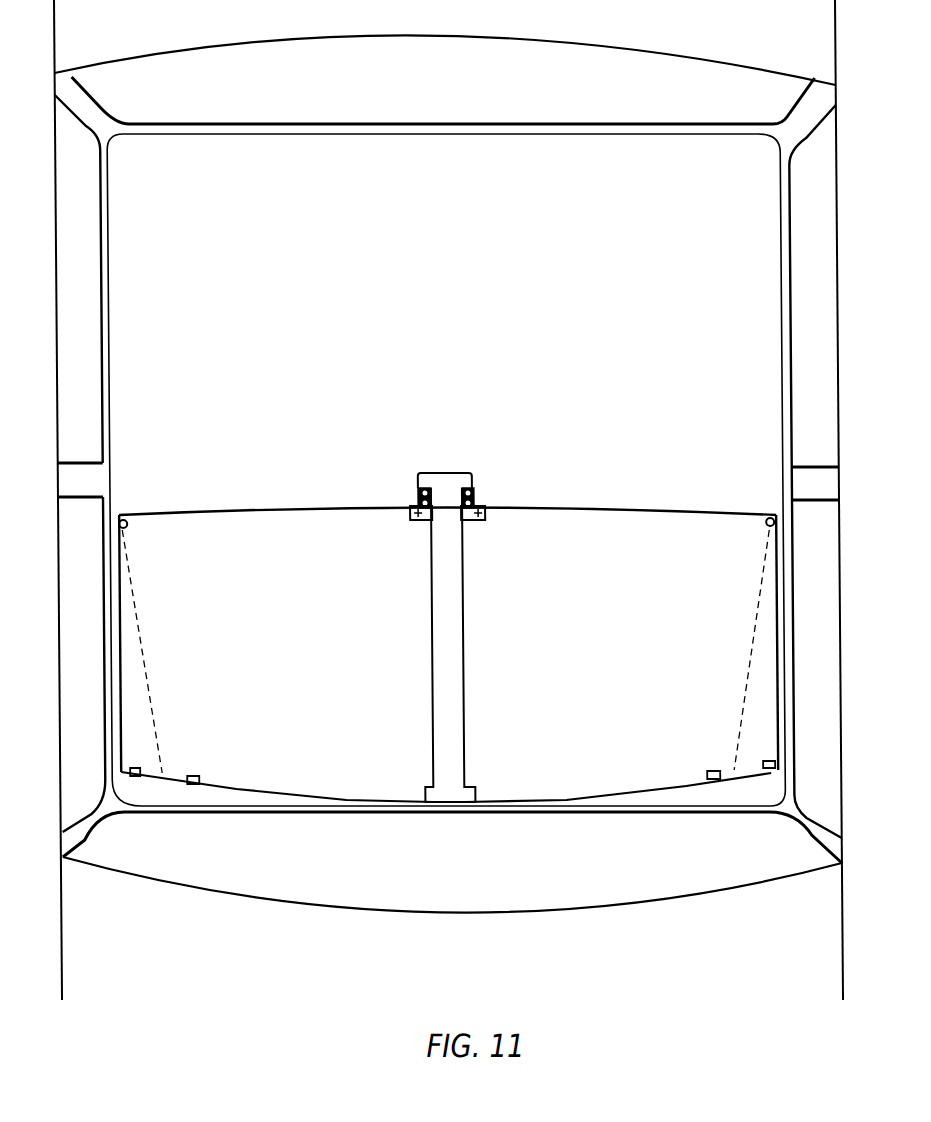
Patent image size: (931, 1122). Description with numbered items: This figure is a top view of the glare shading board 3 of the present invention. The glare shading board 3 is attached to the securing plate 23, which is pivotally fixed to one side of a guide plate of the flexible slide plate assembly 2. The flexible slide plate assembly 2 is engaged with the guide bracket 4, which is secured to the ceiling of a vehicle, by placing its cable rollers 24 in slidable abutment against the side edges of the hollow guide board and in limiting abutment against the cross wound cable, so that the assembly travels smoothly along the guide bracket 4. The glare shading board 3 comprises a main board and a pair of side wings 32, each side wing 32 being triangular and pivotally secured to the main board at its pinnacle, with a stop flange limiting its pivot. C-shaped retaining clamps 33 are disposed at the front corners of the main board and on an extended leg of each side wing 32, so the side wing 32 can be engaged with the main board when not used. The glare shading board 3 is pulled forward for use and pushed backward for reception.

The flexible slide plate assembly 2 is at (466, 498).
The glare shading board 3 is at (594, 522).
The guide bracket 4 is at (444, 487).
The securing plate 23 is at (480, 510).
The cable roller 24 is at (467, 492).
The side wing 32 is at (748, 560).
The retaining clamp 33 is at (762, 769).